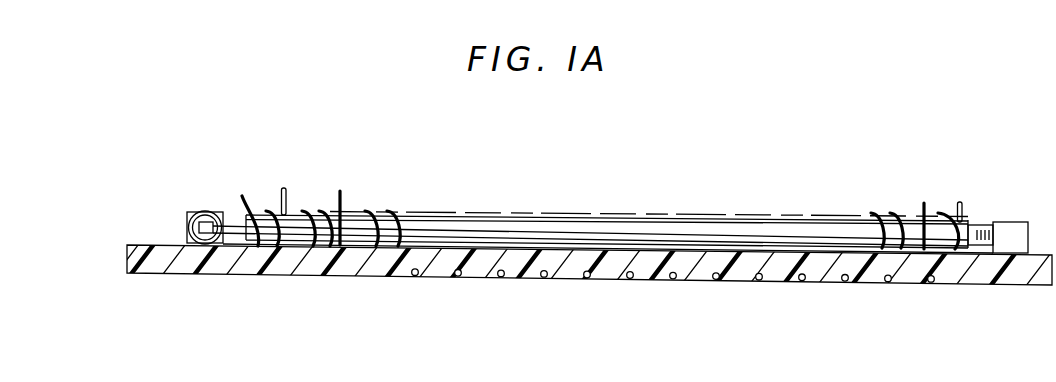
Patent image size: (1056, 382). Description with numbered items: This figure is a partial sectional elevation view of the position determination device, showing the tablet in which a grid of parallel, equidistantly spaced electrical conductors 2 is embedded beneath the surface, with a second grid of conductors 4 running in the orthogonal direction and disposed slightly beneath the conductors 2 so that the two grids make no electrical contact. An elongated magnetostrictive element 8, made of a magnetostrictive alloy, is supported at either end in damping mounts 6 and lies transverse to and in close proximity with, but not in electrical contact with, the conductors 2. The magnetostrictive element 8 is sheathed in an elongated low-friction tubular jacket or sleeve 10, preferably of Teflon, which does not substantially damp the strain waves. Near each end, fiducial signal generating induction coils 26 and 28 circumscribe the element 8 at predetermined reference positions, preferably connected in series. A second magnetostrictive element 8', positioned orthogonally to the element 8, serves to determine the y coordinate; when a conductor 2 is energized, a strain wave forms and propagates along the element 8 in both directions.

The electrical conductors 2 is at (458, 277).
The conductors 4 is at (619, 254).
The damping mounts 6 is at (188, 213).
The magnetostrictive element 8 is at (638, 204).
The second magnetostrictive element 8' is at (572, 197).
The tubular jacket or sleeve 10 is at (797, 233).
The fiducial signal generating induction coil 26 is at (316, 213).
The fiducial signal generating induction coil 28 is at (950, 218).